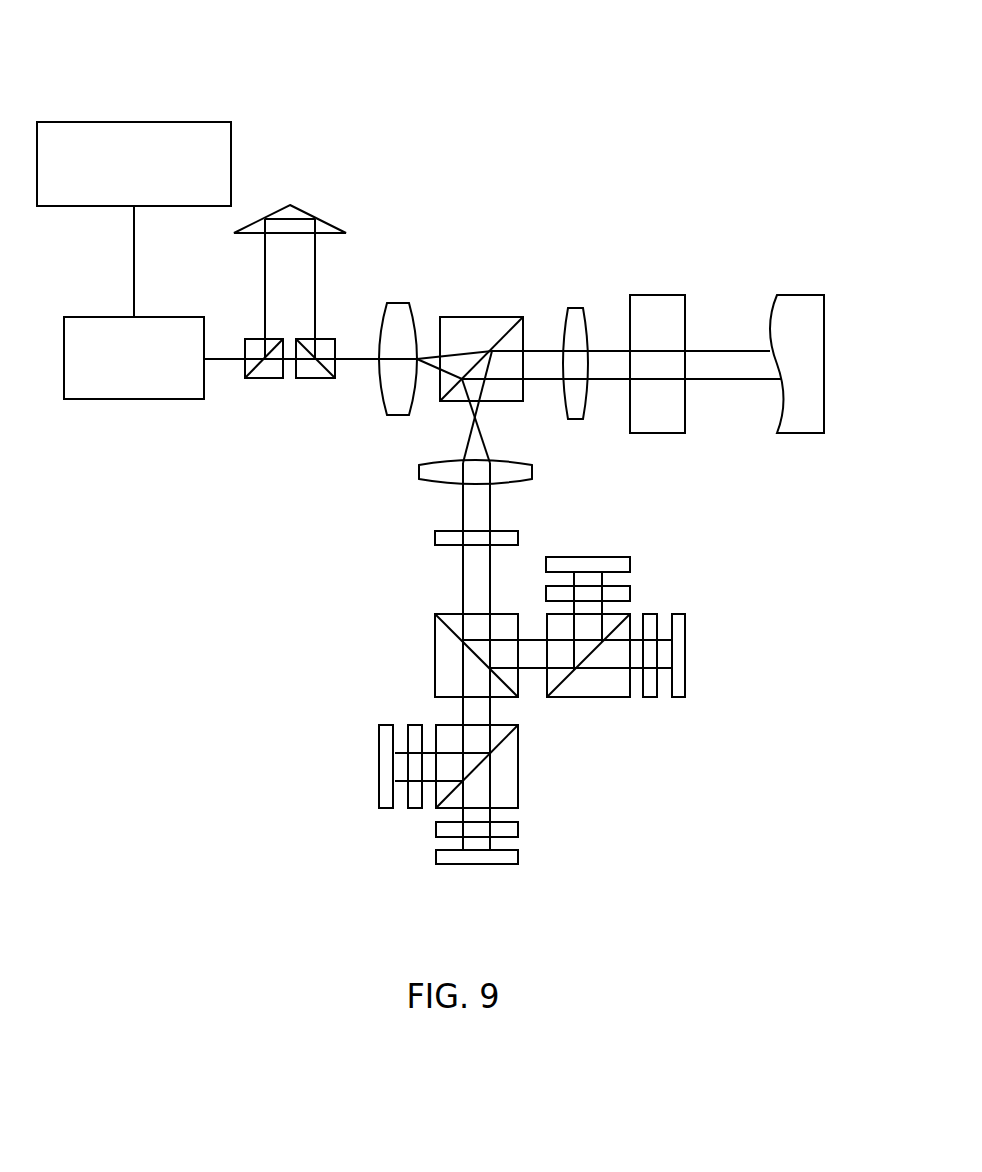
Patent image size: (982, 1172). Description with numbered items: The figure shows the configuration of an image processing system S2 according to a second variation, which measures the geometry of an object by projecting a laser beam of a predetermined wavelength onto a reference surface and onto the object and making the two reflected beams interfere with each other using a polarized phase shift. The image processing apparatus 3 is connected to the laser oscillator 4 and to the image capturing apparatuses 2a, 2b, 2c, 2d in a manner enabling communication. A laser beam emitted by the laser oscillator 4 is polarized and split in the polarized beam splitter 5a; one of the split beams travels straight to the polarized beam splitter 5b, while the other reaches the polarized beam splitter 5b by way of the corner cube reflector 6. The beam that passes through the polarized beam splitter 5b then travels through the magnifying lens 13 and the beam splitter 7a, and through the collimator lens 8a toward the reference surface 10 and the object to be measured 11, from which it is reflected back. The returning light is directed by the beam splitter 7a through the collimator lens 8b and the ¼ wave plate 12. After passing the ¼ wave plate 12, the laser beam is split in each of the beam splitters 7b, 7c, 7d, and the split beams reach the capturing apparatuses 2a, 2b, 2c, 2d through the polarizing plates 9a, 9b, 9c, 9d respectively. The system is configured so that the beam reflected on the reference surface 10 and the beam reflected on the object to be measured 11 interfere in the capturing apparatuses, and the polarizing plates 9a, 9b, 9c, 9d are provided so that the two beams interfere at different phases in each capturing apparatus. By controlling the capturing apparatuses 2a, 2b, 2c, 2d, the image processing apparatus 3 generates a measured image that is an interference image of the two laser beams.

The image processing system S2 is at (452, 80).
The image processing apparatus 3 is at (204, 121).
The laser oscillator 4 is at (178, 317).
The polarized beam splitter 5a is at (266, 378).
The polarized beam splitter 5b is at (324, 338).
The corner cube reflector 6 is at (327, 232).
The magnifying lens 13 is at (399, 303).
The beam splitter 7a is at (504, 317).
The beam splitter 7b is at (447, 613).
The beam splitter 7c is at (630, 698).
The beam splitter 7d is at (520, 795).
The collimator lens 8a is at (577, 308).
The collimator lens 8b is at (505, 462).
The reference surface 10 is at (661, 295).
The object to be measured 11 is at (797, 295).
The ¼ wave plate 12 is at (505, 531).
The image capturing apparatus 2a is at (602, 557).
The image capturing apparatus 2b is at (680, 698).
The image capturing apparatus 2c is at (505, 866).
The image capturing apparatus 2d is at (385, 724).
The polarizing plate 9a is at (632, 586).
The polarizing plate 9b is at (657, 614).
The polarizing plate 9c is at (520, 831).
The polarizing plate 9d is at (412, 810).